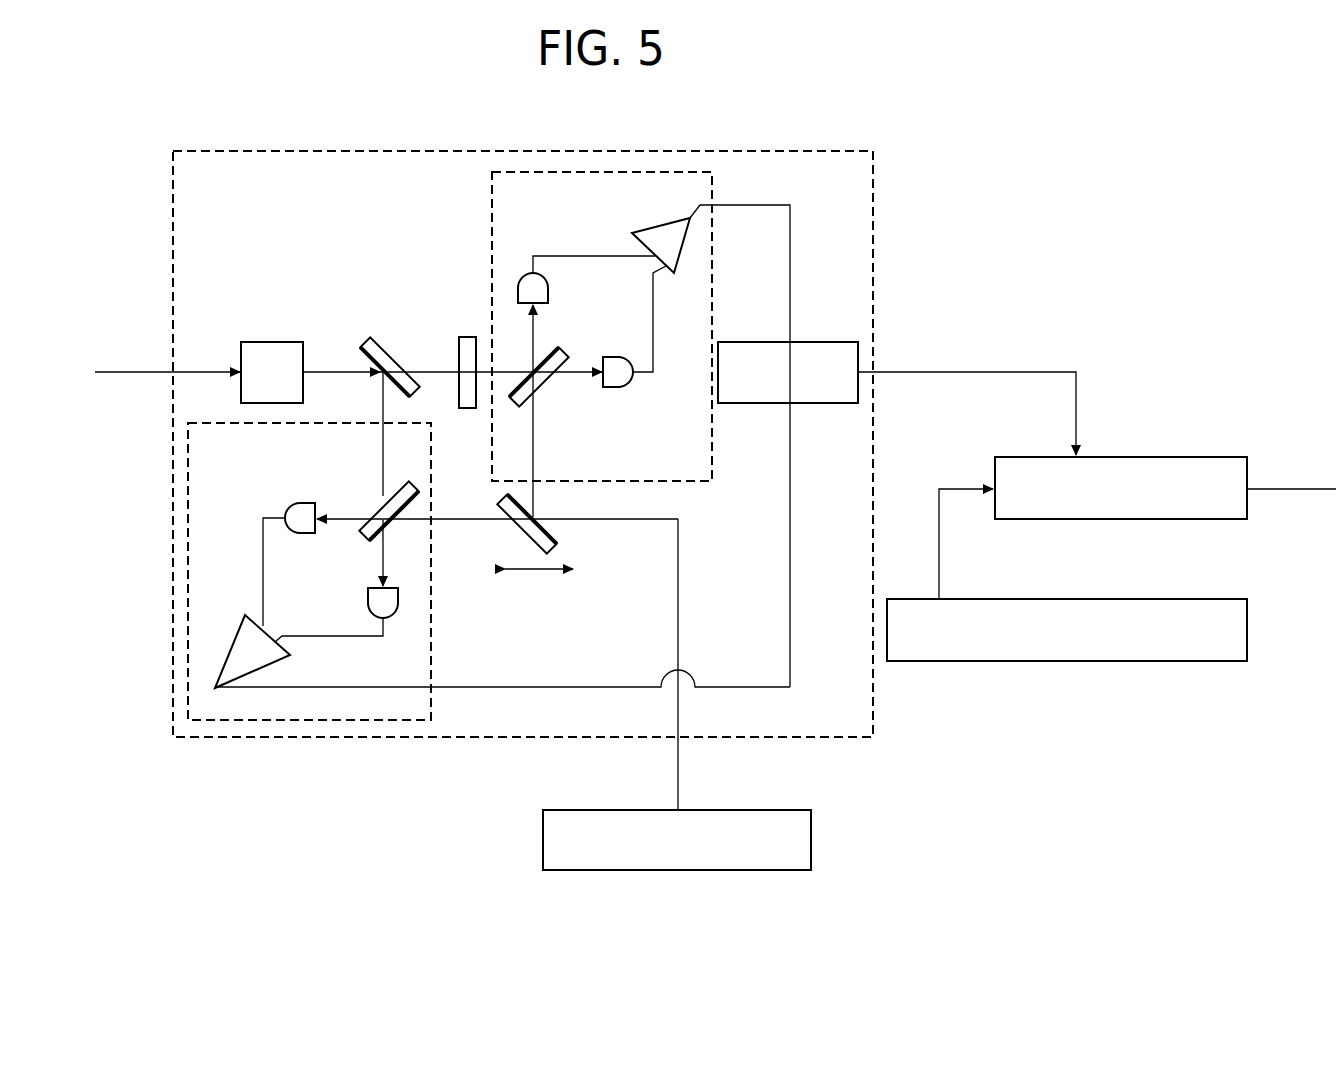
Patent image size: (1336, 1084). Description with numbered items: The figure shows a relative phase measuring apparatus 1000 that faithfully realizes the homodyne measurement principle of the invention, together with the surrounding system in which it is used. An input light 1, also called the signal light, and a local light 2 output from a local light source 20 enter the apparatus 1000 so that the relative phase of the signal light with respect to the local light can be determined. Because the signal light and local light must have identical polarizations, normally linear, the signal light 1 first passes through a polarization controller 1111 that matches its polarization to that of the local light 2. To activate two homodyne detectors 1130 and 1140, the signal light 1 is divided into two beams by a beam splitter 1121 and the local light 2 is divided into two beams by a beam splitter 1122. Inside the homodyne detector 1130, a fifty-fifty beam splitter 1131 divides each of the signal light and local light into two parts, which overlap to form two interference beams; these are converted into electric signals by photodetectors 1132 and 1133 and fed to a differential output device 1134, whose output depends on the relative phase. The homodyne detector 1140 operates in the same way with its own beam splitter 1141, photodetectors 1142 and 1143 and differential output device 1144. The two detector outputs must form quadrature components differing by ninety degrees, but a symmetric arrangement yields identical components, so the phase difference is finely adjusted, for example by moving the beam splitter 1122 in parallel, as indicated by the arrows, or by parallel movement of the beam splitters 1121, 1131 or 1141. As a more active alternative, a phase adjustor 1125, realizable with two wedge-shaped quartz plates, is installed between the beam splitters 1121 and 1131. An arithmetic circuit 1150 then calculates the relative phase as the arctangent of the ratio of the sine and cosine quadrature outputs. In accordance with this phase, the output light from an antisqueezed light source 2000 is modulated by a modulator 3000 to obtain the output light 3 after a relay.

The input light 1 is at (125, 373).
The local light 2 is at (678, 767).
The output light 3 is at (1290, 489).
The local light source 20 is at (543, 838).
The relative phase measuring apparatus 1000 is at (365, 737).
The polarization controller 1111 is at (263, 342).
The beam splitter 1121 is at (366, 345).
The beam splitter 1122 is at (556, 545).
The phase adjustor 1125 is at (466, 337).
The homodyne detector 1130 is at (492, 196).
The 50:50 beam splitter 1131 is at (546, 394).
The photodetector 1132 is at (622, 388).
The photodetector 1133 is at (548, 290).
The differential output device 1134 is at (635, 233).
The homodyne detector 1140 is at (431, 648).
The beam splitter 1141 is at (383, 499).
The photodetector 1142 is at (300, 504).
The photodetector 1143 is at (368, 592).
The differential output device 1144 is at (290, 655).
The arithmetic circuit 1150 is at (832, 342).
The antisqueezed light source 2000 is at (1063, 661).
The modulator 3000 is at (1146, 457).